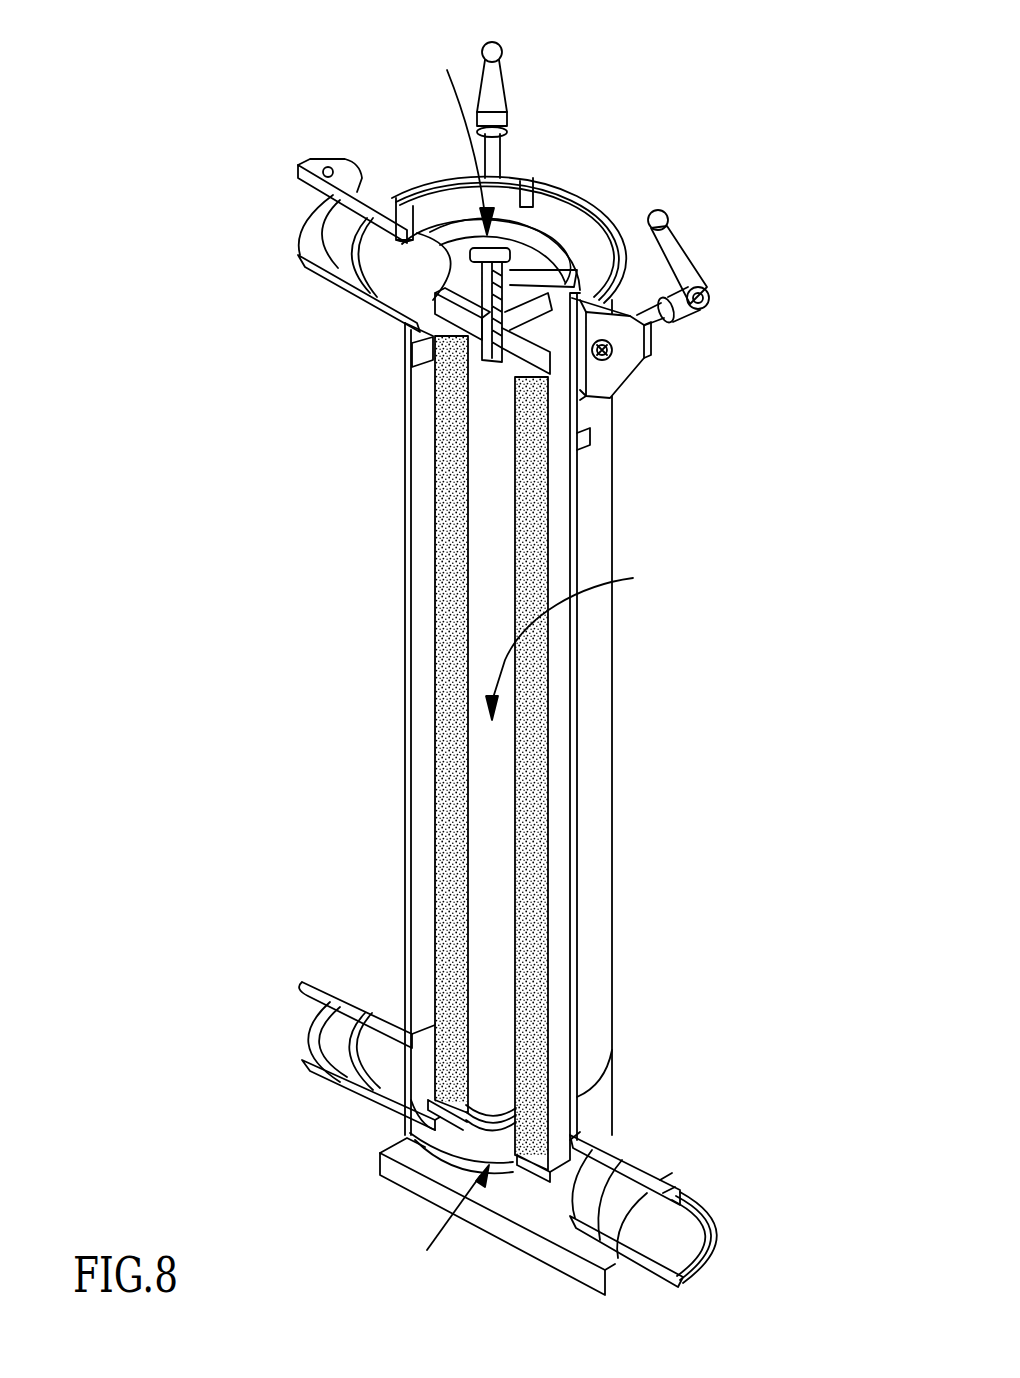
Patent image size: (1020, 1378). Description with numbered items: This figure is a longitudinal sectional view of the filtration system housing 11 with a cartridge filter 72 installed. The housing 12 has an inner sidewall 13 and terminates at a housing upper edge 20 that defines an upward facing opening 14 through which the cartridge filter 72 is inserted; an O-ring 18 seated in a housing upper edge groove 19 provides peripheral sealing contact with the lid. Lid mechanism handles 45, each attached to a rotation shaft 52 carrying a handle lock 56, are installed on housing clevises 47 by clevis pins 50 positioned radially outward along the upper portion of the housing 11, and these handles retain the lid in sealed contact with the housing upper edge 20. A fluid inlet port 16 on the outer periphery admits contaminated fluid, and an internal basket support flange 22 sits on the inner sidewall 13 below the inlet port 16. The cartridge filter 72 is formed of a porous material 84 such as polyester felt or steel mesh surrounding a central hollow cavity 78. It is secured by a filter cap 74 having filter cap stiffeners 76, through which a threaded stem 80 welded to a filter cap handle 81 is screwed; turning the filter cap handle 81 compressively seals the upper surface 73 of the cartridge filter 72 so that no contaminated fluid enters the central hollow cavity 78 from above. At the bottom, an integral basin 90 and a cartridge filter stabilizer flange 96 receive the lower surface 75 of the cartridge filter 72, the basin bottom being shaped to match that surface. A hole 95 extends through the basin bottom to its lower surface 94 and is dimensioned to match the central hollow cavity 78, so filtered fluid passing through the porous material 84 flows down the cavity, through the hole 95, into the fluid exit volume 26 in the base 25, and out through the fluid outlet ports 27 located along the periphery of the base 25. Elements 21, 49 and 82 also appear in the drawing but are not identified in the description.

The filtration system housing 11 is at (612, 775).
The housing 12 is at (407, 604).
The inner sidewall 13 is at (428, 497).
The opening 14 is at (455, 136).
The fluid inlet port 16 is at (330, 228).
The O-ring 18 is at (405, 197).
The housing upper edge groove 19 is at (572, 252).
The housing upper edge 20 is at (527, 188).
The notch 21 is at (437, 186).
The basket support flange 22 is at (410, 352).
The base 25 is at (563, 1272).
The fluid exit volume 26 is at (442, 1217).
The fluid outlet port 27 is at (315, 1037).
The lid mechanism handle 45 is at (486, 46).
The housing clevis 47 is at (646, 345).
The fastener 49 is at (645, 350).
The clevis pin 50 is at (610, 385).
The rotation shaft 52 is at (503, 140).
The handle lock 56 is at (497, 128).
The cartridge filter 72 is at (560, 657).
The upper surface 73 is at (481, 285).
The filter cap 74 is at (578, 485).
The lower surface 75 is at (520, 1155).
The filter cap stiffener 76 is at (440, 305).
The central hollow cavity 78 is at (575, 639).
The stem 80 is at (453, 283).
The filter cap handle 81 is at (562, 183).
The seal ring 82 is at (590, 208).
The porous material 84 is at (437, 838).
The integral basin 90 is at (557, 1157).
The lower surface 94 is at (445, 1135).
The hole 95 is at (470, 1153).
The cartridge filter stabilizer flange 96 is at (423, 1028).